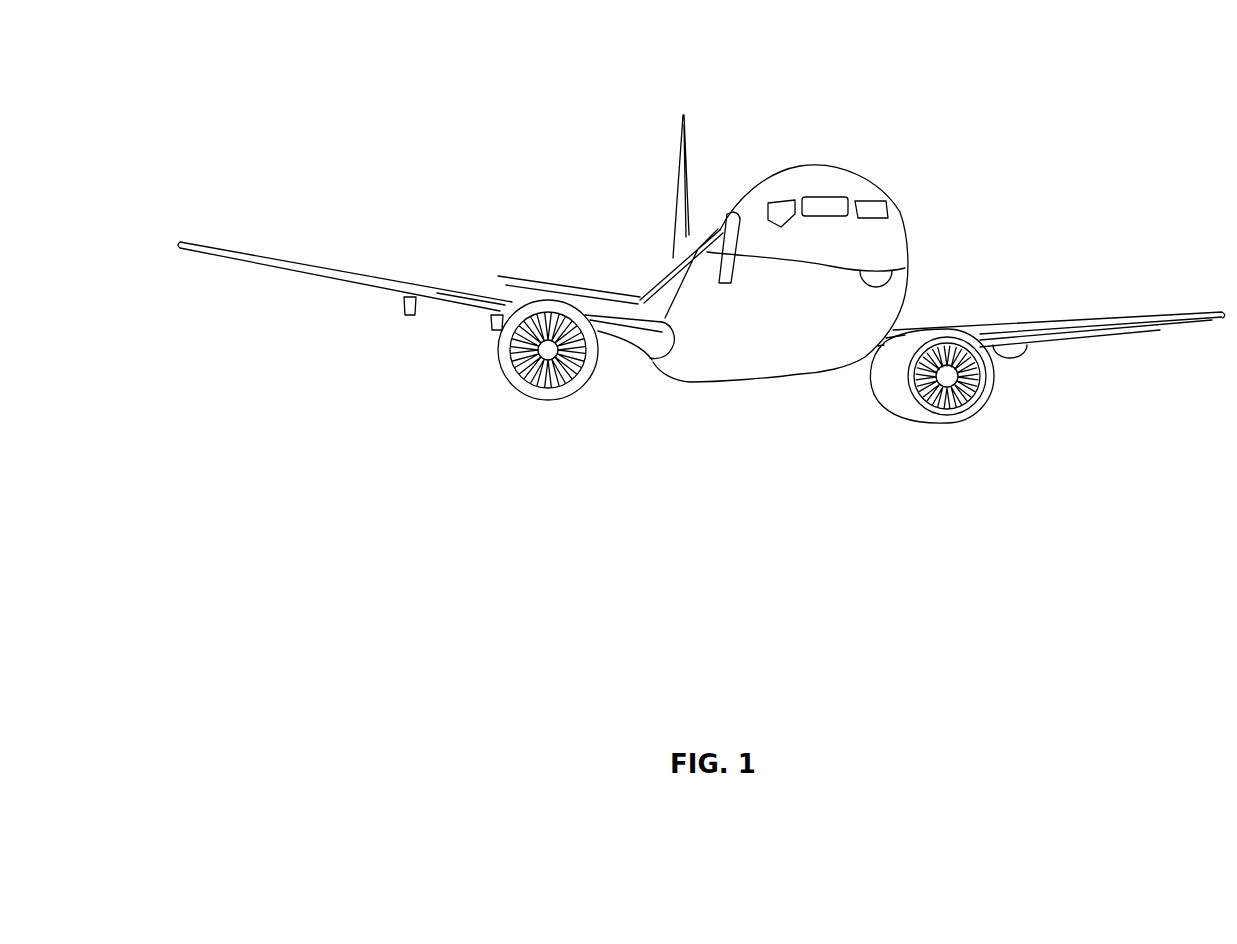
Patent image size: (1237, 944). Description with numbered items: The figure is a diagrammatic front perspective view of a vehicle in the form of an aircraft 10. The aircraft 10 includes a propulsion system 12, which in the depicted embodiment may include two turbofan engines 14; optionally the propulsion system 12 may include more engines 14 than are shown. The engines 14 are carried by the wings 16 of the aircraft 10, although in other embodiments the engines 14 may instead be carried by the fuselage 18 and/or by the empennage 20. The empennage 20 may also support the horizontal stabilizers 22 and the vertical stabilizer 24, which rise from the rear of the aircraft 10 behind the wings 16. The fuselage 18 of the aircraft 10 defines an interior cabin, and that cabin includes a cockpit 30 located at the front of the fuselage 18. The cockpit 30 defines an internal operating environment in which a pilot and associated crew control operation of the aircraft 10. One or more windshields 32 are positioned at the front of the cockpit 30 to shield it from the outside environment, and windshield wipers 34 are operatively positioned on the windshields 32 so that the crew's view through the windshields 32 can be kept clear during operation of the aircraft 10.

The aircraft 10 is at (435, 52).
The propulsion system 12 is at (1040, 415).
The turbofan engines 14 is at (541, 395).
The wings 16 is at (320, 266).
The fuselage 18 is at (906, 228).
The empennage 20 is at (668, 258).
The horizontal stabilizers 22 is at (542, 281).
The vertical stabilizer 24 is at (680, 158).
The cockpit 30 is at (821, 192).
The windshields 32 is at (832, 199).
The windshield wipers 34 is at (808, 196).